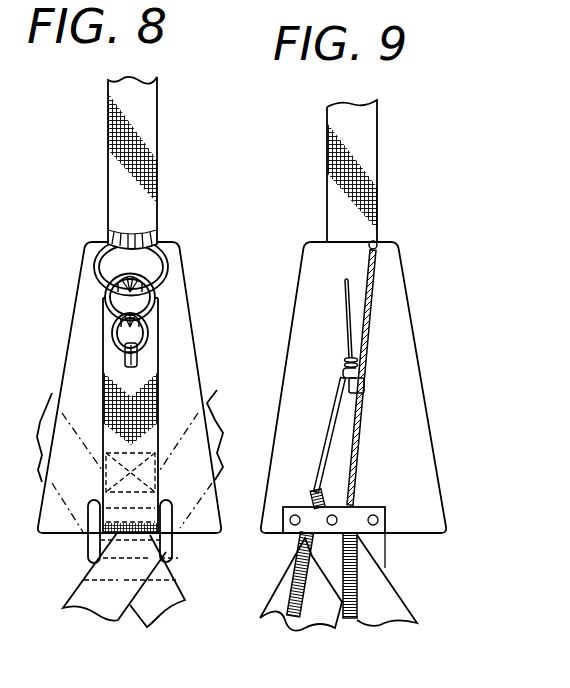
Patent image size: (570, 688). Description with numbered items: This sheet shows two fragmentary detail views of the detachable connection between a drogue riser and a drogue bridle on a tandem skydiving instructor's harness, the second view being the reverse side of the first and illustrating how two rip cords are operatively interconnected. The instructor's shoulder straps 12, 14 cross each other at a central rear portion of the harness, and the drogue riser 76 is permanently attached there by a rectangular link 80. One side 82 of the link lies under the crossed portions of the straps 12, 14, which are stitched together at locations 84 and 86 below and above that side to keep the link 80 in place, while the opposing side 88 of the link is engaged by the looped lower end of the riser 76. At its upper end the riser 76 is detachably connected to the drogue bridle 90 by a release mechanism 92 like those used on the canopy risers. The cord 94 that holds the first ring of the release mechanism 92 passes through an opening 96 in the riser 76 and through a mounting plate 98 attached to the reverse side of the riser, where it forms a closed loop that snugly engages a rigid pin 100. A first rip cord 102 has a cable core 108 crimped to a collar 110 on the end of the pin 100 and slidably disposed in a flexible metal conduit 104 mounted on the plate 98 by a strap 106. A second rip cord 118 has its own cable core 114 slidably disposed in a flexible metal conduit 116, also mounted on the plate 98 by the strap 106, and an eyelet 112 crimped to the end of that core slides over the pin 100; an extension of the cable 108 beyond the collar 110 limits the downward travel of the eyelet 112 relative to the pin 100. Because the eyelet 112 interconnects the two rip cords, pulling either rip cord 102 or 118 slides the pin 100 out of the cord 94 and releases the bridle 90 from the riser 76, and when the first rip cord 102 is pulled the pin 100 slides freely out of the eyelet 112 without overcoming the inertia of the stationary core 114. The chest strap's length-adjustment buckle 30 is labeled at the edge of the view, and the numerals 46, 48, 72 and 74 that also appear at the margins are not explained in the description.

In FIG. 8, the shoulder strap 12 is at (214, 433).
In FIG. 9, the shoulder strap 12 is at (280, 606).
In FIG. 8, the shoulder strap 14 is at (34, 456).
In FIG. 9, the shoulder strap 14 is at (400, 609).
In FIG. 8, the length-adjustment buckle 30 is at (22, 236).
In FIG. 8, the panel 46 is at (26, 268).
In FIG. 8, the flap 48 is at (26, 396).
In FIG. 8, the strap 72 is at (112, 687).
In FIG. 8, the strap 74 is at (42, 685).
In FIG. 8, the drogue riser 76 is at (103, 395).
In FIG. 8, the rectangular link 80 is at (92, 552).
In FIG. 8, the side of the link 82 is at (135, 567).
In FIG. 8, the stitching location 84 is at (92, 582).
In FIG. 8, the stitching location 86 is at (150, 547).
In FIG. 8, the opposing side of the link 88 is at (108, 523).
In FIG. 8, the drogue bridle 90 is at (108, 126).
In FIG. 9, the drogue bridle 90 is at (365, 146).
In FIG. 8, the release mechanism 92 is at (88, 292).
In FIG. 8, the cord 94 is at (128, 354).
In FIG. 8, the opening 96 is at (133, 364).
In FIG. 8, the mounting plate 98 is at (92, 252).
In FIG. 9, the mounting plate 98 is at (308, 253).
In FIG. 9, the rigid pin 100 is at (347, 303).
In FIG. 9, the first rip cord 102 is at (368, 490).
In FIG. 9, the flexible metal conduit 104 is at (357, 578).
In FIG. 9, the strap 106 is at (305, 510).
In FIG. 9, the cable core 108 is at (376, 262).
In FIG. 9, the collar 110 is at (364, 388).
In FIG. 9, the eyelet 112 is at (342, 374).
In FIG. 9, the cable core 114 is at (333, 428).
In FIG. 9, the flexible metal conduit 116 is at (297, 566).
In FIG. 9, the second rip cord 118 is at (294, 552).